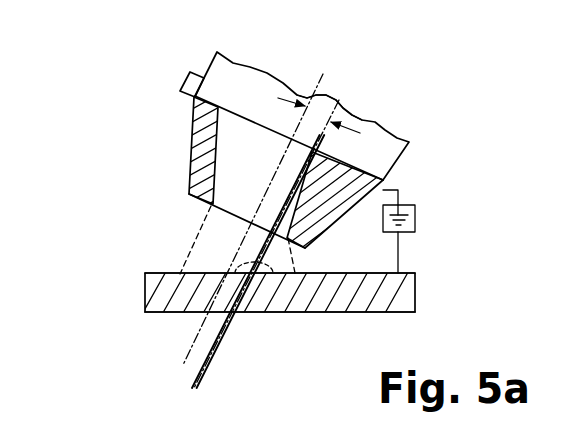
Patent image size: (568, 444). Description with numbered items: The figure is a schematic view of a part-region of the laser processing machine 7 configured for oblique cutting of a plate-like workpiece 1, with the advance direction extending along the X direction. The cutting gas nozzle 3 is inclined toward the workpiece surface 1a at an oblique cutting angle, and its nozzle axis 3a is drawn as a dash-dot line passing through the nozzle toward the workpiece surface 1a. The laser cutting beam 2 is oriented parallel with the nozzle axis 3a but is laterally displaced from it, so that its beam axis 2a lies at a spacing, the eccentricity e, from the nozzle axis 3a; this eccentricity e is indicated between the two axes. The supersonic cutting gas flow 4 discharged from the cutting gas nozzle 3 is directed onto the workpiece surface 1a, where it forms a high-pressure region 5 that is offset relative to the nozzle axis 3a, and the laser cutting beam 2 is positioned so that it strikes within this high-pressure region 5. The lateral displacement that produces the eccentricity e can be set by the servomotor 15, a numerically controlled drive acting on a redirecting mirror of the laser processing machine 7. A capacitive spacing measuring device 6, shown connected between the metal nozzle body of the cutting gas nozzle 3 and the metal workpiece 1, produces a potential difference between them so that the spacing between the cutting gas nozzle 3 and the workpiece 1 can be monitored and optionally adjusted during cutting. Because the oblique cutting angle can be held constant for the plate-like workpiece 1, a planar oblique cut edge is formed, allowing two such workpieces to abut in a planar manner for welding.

The workpiece 1 is at (173, 233).
The workpiece surface 1a is at (162, 275).
The laser cutting beam 2 is at (320, 146).
The beam axis 2a is at (345, 108).
The cutting gas nozzle 3 is at (200, 155).
The nozzle axis 3a is at (322, 83).
The supersonic cutting gas flow 4 is at (251, 244).
The high-pressure region 5 is at (268, 314).
The capacitive spacing measuring device 6 is at (407, 208).
The laser processing machine 7 is at (357, 80).
The servomotor 15 is at (192, 83).
The eccentricity e is at (319, 115).